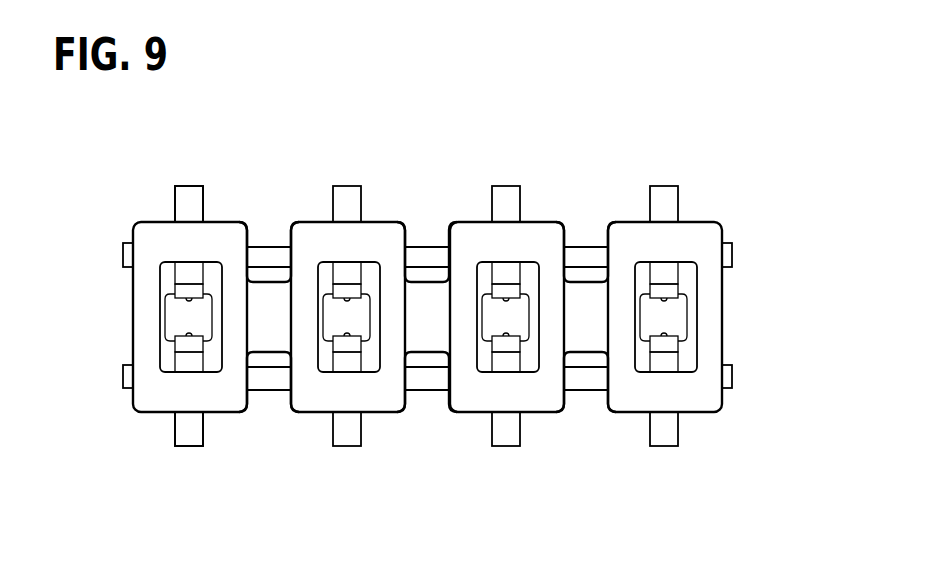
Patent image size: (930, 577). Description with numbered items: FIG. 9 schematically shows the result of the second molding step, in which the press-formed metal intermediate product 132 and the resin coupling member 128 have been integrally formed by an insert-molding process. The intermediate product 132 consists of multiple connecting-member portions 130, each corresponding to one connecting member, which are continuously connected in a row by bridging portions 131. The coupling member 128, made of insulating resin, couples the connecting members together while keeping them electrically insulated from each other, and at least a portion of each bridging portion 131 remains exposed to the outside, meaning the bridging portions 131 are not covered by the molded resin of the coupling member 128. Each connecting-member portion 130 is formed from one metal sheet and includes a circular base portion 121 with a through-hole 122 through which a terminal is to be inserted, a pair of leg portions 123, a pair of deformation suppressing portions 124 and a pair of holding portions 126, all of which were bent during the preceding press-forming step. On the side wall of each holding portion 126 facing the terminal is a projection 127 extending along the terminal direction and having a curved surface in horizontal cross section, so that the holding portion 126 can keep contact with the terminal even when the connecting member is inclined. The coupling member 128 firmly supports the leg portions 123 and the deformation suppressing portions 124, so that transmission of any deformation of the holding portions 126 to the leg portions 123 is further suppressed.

The base portion 121 is at (168, 360).
The through-hole 122 is at (213, 323).
The leg portions 123 is at (188, 185).
The deformation suppressing portions 124 is at (186, 212).
The holding portions 126 is at (187, 292).
The projection 127 is at (188, 333).
The coupling member 128 is at (710, 313).
The connecting-member portions 130 is at (205, 457).
The bridging portions 131 is at (125, 257).
The intermediate product 132 is at (679, 178).